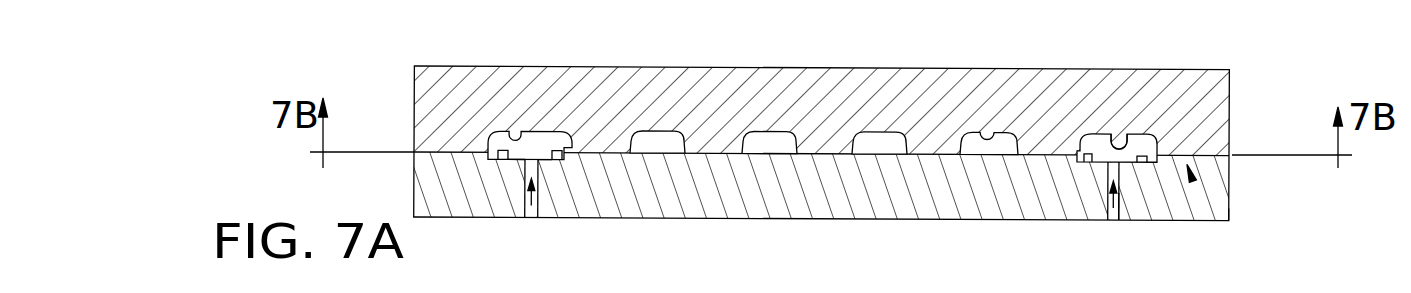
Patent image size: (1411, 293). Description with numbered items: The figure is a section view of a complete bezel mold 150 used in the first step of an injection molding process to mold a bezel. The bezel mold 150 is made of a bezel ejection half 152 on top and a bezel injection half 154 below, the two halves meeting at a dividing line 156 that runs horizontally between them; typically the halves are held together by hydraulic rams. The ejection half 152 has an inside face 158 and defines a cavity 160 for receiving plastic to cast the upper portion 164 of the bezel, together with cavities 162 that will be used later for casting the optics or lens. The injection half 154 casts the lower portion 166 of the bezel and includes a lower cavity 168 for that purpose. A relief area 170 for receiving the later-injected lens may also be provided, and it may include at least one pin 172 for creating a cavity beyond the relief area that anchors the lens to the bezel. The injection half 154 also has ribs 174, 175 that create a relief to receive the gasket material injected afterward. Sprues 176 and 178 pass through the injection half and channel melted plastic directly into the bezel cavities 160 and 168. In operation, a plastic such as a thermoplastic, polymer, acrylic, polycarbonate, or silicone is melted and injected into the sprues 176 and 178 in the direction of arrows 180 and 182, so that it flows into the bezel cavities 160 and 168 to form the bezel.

The bezel mold 150 is at (1249, 68).
The bezel ejection half 152 is at (1232, 106).
The bezel injection half 154 is at (1232, 193).
The dividing line 156 is at (1202, 154).
The inside face 158 is at (1222, 221).
The cavity 160 is at (515, 131).
The cavities 162 is at (983, 139).
The upper portion of the bezel 164 is at (538, 142).
The lower portion of the bezel 166 is at (547, 155).
The lower cavity 168 is at (527, 160).
The relief area 170 is at (1082, 150).
The pin 172 is at (1080, 138).
The rib 174 is at (1142, 165).
The rib 175 is at (503, 160).
The sprue 176 is at (540, 205).
The sprue 178 is at (1124, 219).
The arrow 180 is at (522, 205).
The arrow 182 is at (1110, 204).